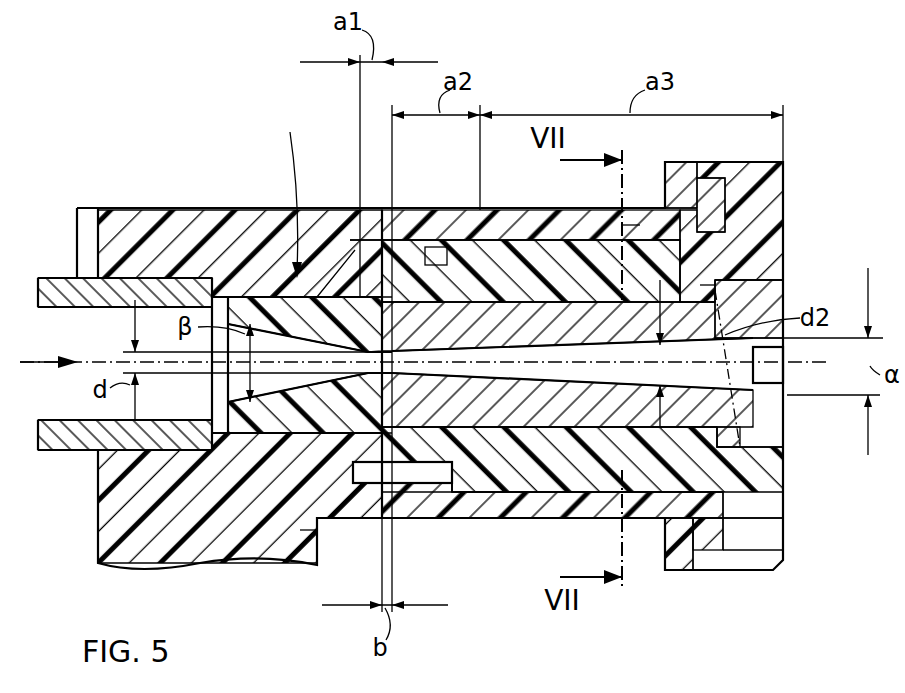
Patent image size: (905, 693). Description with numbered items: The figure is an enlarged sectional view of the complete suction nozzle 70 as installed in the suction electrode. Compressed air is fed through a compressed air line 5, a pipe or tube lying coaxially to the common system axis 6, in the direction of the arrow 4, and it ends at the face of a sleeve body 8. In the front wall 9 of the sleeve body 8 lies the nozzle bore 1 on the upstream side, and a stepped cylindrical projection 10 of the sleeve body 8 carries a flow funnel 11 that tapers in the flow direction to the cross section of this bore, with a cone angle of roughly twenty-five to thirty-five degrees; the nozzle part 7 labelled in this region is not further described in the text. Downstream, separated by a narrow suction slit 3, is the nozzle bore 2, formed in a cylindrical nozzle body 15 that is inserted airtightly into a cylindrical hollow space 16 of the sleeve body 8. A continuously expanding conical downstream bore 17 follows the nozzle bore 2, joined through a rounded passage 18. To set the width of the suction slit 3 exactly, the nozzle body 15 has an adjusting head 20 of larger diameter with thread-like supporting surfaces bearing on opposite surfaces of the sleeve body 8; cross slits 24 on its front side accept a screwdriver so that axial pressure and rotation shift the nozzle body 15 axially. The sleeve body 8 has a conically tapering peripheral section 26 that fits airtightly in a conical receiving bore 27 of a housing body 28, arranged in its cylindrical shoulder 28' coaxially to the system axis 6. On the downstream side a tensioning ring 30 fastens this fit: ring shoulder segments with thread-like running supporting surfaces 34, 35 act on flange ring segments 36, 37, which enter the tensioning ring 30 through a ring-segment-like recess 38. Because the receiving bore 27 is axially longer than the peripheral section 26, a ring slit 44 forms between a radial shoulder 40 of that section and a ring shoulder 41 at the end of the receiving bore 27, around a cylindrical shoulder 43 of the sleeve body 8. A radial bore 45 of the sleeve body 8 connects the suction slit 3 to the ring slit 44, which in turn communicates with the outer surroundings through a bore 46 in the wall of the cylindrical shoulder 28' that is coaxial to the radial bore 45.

The nozzle bore on the upstream side 1 is at (345, 262).
The nozzle bore on the downstream side 2 is at (470, 330).
The suction slit 3 is at (395, 300).
The arrow 4 is at (38, 366).
The compressed air line 5 is at (57, 285).
The system axis 6 is at (810, 400).
The nozzle body 7 is at (235, 300).
The sleeve body 8 is at (527, 275).
The front wall 9 is at (315, 540).
The stepped cylindrical projection 10 is at (290, 300).
The flow funnel 11 is at (225, 388).
The nozzle body 15 is at (718, 285).
The cylindrical hollow space 16 is at (560, 308).
The downstream bore 17 is at (765, 478).
The passage 18 is at (517, 440).
The adjusting head 20 is at (760, 300).
The cross slits 24 is at (740, 440).
The peripheral section 26 is at (550, 505).
The conical receiving bore 27 is at (450, 258).
The housing body 28 is at (229, 224).
The cylindrical shoulder 28' is at (645, 178).
The tensioning ring 30 is at (770, 215).
The thread-like running supporting surface 34 is at (695, 165).
The thread-like running supporting surface 35 is at (690, 560).
The flange ring segment 36 is at (730, 195).
The flange ring segment 37 is at (712, 548).
The ring-segment-like recess 38 is at (760, 535).
The radial shoulder 40 is at (465, 490).
The ring shoulder 41 is at (362, 485).
The cylindrical shoulder 43 is at (432, 295).
The ring slit 44 is at (408, 498).
The radial bore 45 is at (292, 532).
The bore 46 is at (432, 498).
The suction nozzle 70 is at (285, 193).